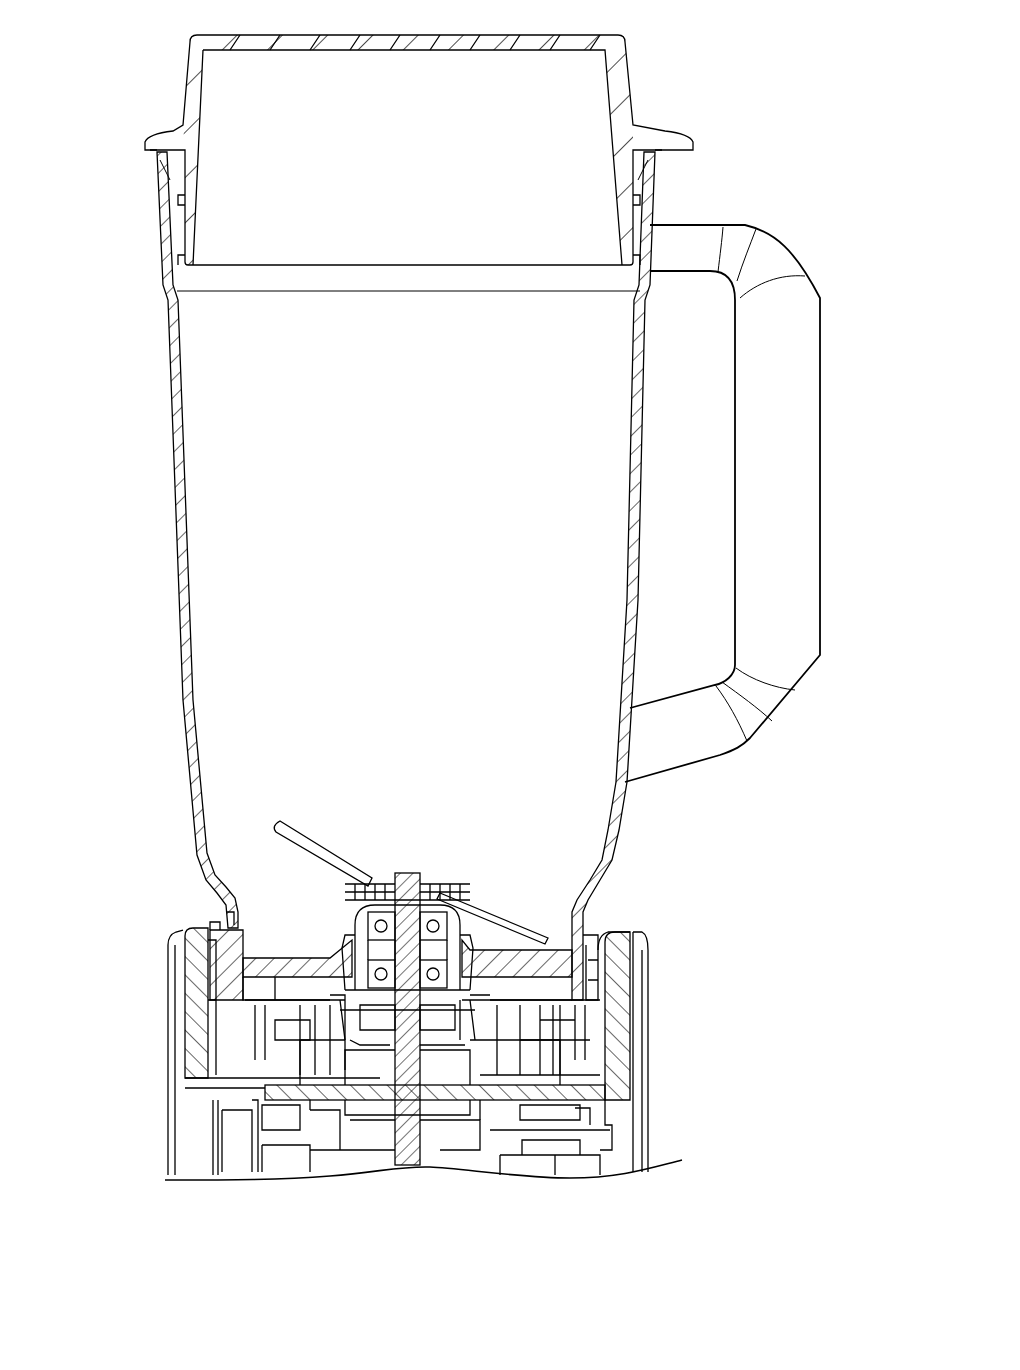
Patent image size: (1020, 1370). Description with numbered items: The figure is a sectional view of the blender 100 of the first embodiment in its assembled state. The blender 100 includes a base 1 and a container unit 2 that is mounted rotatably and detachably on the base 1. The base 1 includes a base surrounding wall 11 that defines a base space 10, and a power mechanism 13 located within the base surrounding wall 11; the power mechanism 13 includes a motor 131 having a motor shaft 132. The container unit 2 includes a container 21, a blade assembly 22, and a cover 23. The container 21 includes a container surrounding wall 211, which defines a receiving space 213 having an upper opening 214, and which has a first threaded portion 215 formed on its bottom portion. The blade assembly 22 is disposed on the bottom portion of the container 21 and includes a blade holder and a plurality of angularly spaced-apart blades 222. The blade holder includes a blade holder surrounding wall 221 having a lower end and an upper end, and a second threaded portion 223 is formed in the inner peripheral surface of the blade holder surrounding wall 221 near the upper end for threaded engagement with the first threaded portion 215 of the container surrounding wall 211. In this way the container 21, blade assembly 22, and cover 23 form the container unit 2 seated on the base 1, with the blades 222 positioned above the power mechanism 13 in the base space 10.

The blender 100 is at (708, 90).
The base 1 is at (166, 1089).
The base space 10 is at (200, 1145).
The base surrounding wall 11 is at (175, 1057).
The power mechanism 13 is at (383, 1155).
The motor 131 is at (437, 1155).
The motor shaft 132 is at (405, 1140).
The container unit 2 is at (140, 562).
The container 21 is at (168, 509).
The container surrounding wall 211 is at (172, 452).
The receiving space 213 is at (255, 625).
The upper opening 214 is at (185, 180).
The first threaded portion 215 is at (222, 930).
The blade assembly 22 is at (206, 1015).
The blade holder surrounding wall 221 is at (205, 998).
The blades 222 is at (280, 820).
The second threaded portion 223 is at (613, 935).
The cover 23 is at (141, 106).